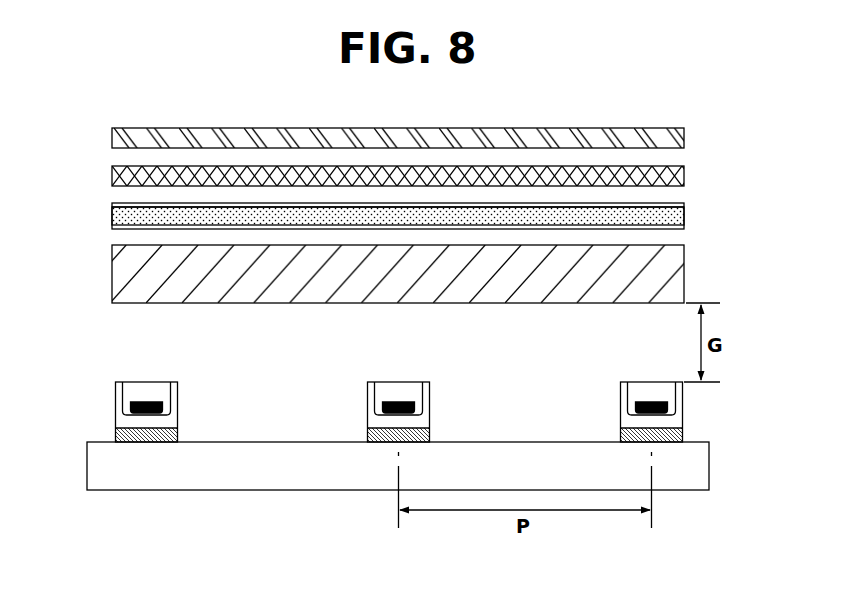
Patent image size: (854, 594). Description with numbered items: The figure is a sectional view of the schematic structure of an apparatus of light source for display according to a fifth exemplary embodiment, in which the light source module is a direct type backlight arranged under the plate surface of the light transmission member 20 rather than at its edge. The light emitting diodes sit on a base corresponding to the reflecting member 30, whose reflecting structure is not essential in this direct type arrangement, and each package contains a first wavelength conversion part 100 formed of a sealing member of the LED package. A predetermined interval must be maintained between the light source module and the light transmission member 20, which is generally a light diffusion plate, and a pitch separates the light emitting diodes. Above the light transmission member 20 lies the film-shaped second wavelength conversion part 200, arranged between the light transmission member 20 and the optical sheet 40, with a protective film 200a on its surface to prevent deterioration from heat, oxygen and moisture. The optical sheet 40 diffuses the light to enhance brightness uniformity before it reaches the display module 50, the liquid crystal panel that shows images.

The light transmission member 20 is at (684, 273).
The reflecting member 30 is at (709, 468).
The optical sheet 40 is at (684, 172).
The display module 50 is at (684, 137).
The first wavelength conversion part 100 is at (130, 388).
The second wavelength conversion part 200 is at (684, 224).
The protective film 200a is at (684, 204).